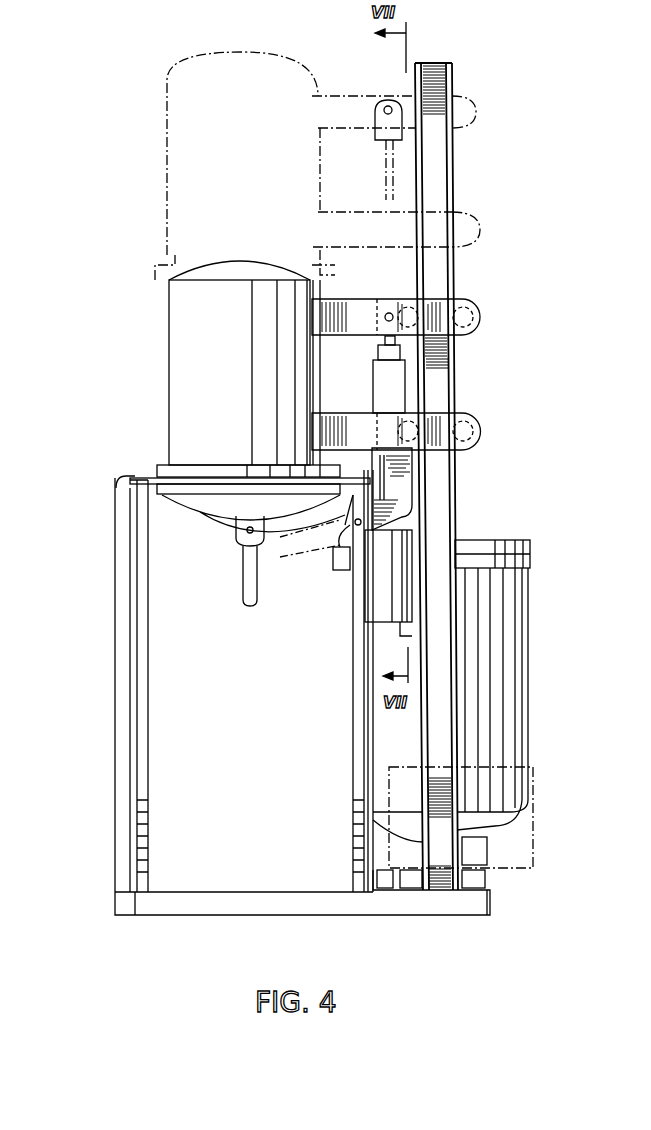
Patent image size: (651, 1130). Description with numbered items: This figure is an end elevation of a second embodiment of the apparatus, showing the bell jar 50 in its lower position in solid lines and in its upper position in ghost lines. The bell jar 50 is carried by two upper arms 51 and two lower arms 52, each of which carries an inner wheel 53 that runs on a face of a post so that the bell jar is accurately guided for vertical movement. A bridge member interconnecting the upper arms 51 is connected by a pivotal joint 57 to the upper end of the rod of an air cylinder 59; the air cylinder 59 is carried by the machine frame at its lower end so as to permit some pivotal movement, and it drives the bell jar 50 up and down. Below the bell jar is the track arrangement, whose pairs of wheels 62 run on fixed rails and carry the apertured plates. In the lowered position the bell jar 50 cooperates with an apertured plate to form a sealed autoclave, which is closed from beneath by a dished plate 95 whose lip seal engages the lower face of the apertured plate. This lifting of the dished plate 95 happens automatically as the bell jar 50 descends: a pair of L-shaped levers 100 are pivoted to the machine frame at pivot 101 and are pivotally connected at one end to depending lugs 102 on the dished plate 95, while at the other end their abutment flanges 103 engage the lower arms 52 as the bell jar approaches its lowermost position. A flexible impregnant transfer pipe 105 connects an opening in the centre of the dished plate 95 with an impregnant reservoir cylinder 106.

The bell jar 50 is at (216, 359).
The upper arms 51 is at (482, 318).
The lower arms 52 is at (482, 431).
The inner wheel 53 is at (412, 310).
The pivotal joint 57 is at (389, 313).
The air cylinder 59 is at (383, 580).
The wheels 62 is at (118, 485).
The dished plate 95 is at (214, 512).
The L-shaped levers 100 is at (398, 510).
The pivot 101 is at (350, 552).
The depending lugs 102 is at (237, 540).
The abutment flanges 103 is at (400, 468).
The flexible impregnant transfer pipe 105 is at (250, 606).
The impregnant reservoir cylinder 106 is at (487, 702).